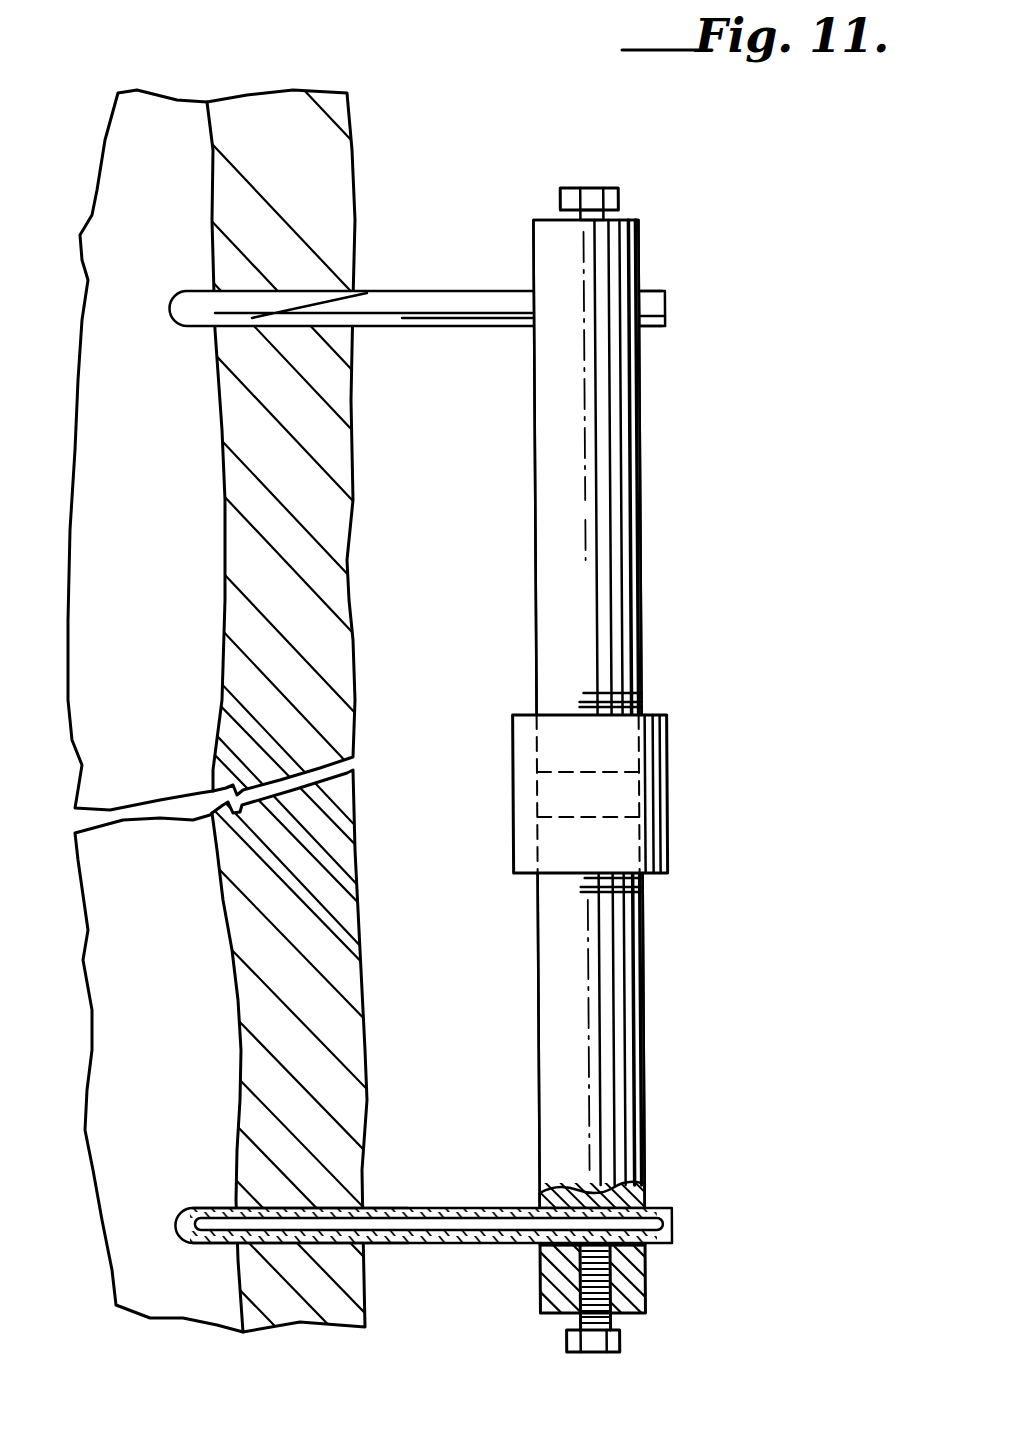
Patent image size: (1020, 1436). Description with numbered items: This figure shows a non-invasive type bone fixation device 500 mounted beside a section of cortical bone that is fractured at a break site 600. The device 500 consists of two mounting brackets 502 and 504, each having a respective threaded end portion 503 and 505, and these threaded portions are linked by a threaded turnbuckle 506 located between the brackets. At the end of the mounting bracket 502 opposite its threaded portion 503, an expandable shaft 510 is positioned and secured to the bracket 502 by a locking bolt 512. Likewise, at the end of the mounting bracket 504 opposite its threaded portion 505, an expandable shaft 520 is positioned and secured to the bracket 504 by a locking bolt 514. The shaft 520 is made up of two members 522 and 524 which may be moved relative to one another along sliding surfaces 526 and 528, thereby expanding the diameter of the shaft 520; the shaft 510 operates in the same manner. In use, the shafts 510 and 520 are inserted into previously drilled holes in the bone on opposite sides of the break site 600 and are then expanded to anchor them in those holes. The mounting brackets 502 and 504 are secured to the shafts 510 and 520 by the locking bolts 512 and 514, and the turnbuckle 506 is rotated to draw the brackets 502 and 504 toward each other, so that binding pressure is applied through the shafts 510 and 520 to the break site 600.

The device 500 is at (704, 424).
The mounting bracket 502 is at (641, 491).
The threaded end portion 503 is at (637, 698).
The mounting bracket 504 is at (641, 1035).
The threaded end portion 505 is at (640, 885).
The threaded turnbuckle 506 is at (667, 792).
The expandable shaft 510 is at (500, 329).
The locking bolt 512 is at (613, 180).
The locking bolt 514 is at (620, 1337).
The expandable shaft 520 is at (424, 1214).
The member 522 is at (472, 1246).
The member 524 is at (322, 1205).
The sliding surface 526 is at (365, 1250).
The sliding surface 528 is at (362, 1207).
The break site 600 is at (360, 757).